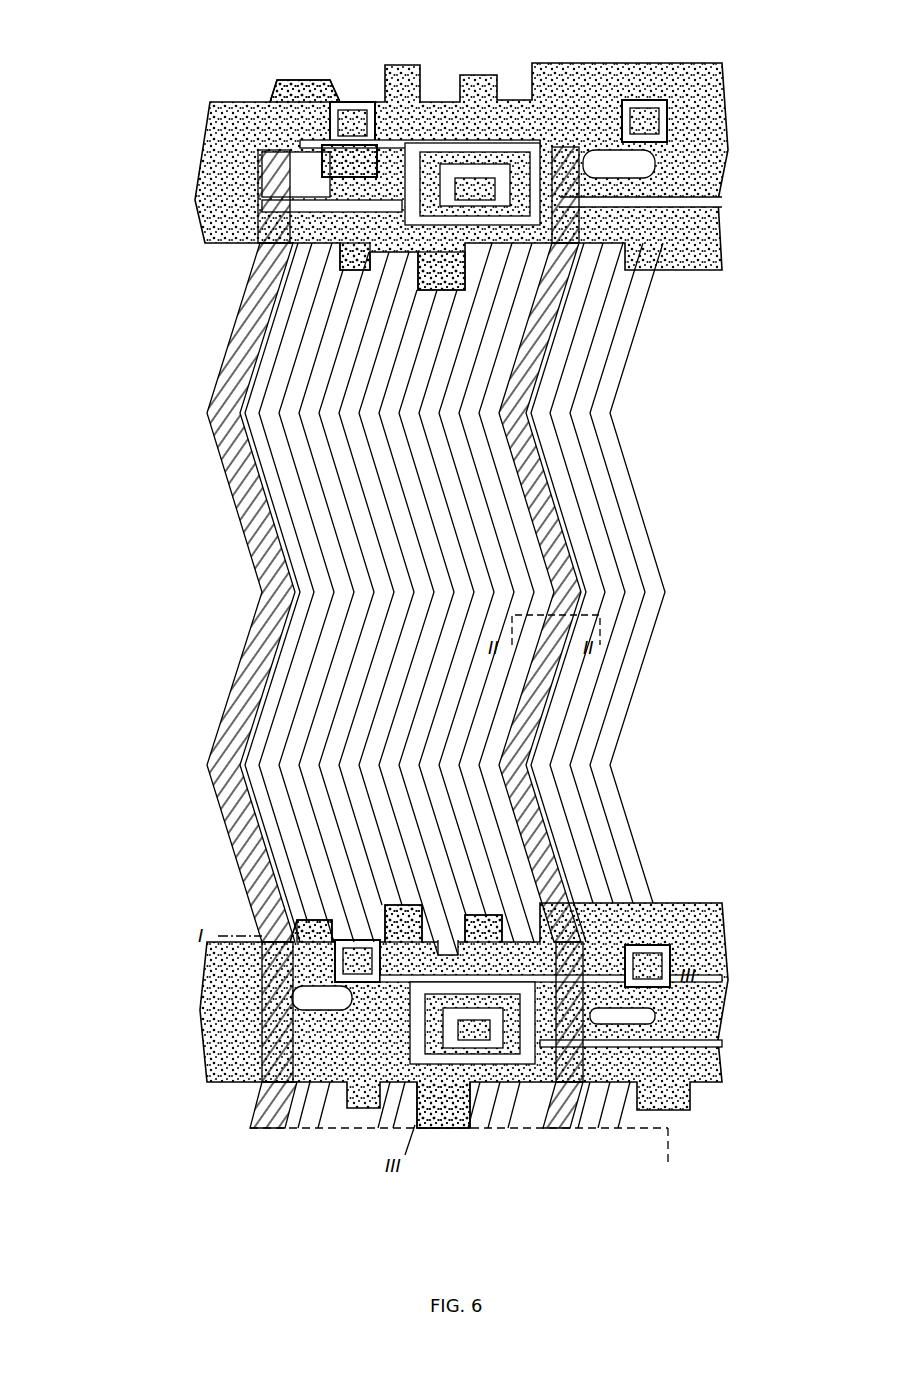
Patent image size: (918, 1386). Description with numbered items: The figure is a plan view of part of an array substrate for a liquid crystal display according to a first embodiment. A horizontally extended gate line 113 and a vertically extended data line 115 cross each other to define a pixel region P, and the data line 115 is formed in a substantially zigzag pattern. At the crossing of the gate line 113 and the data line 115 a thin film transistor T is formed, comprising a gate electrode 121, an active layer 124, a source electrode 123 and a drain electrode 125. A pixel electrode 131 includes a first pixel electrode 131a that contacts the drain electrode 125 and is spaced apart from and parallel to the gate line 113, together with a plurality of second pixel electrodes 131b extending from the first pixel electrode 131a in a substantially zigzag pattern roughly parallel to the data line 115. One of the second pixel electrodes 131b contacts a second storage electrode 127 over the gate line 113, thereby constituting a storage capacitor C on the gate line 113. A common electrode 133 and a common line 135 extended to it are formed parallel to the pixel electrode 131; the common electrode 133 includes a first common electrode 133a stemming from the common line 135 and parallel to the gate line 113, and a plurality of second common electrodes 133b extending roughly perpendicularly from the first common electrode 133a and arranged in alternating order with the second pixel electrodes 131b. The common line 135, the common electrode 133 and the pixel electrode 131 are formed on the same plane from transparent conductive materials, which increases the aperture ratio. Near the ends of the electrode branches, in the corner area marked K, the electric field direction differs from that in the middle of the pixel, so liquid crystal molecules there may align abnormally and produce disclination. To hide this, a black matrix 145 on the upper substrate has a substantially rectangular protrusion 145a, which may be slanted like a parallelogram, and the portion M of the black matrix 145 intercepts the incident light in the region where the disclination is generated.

The thin film transistor T is at (327, 108).
The drain electrode 125 is at (330, 143).
The gate electrode 121 is at (300, 160).
The active layer 124 is at (300, 170).
The source electrode 123 is at (290, 172).
The common electrode 133 is at (132, 246).
The first common electrode 133a is at (318, 229).
The second common electrodes 133b is at (292, 276).
The common line 135 is at (512, 333).
The data line 115 is at (213, 393).
The pixel region P is at (674, 518).
The corner region K is at (548, 890).
The pixel electrode 131 is at (680, 584).
The first pixel electrode 131a is at (588, 925).
The second pixel electrodes 131b is at (592, 895).
The black matrix 145 is at (728, 903).
The protrusion 145a is at (320, 918).
The second storage electrode 127 is at (655, 1021).
The gate line 113 is at (318, 1105).
The storage capacitor C is at (466, 1126).
The portion of the black matrix M is at (385, 892).